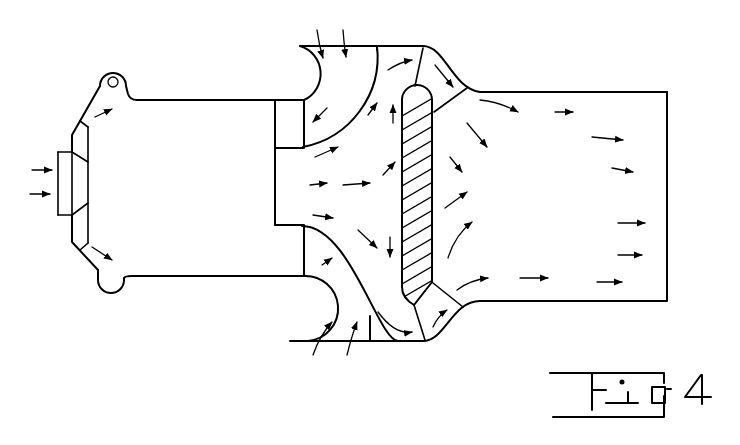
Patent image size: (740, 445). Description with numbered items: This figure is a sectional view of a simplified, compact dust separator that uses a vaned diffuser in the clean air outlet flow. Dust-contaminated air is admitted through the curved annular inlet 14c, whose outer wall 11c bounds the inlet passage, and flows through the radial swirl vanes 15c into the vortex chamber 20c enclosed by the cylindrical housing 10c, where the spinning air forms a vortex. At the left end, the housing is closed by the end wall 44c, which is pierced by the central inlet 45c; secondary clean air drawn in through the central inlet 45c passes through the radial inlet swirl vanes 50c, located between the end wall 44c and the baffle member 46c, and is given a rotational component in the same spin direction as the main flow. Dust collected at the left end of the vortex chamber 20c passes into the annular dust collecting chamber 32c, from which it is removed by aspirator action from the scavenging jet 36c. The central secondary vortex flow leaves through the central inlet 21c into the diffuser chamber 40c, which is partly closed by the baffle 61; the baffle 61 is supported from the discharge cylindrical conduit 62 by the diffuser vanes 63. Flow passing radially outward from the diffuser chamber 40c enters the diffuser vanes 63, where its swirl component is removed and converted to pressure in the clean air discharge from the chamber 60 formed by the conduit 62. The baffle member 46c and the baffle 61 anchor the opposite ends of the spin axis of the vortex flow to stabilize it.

The cylindrical housing 10c is at (202, 277).
The inlet vane wall 11c is at (318, 72).
The curved annular inlet 14c is at (357, 88).
The radial swirl vanes 15c is at (277, 118).
The vortex chamber 20c is at (211, 167).
The central inlet 21c is at (274, 205).
The annular dust collecting chamber 32c is at (113, 297).
The scavenging jet 36c is at (123, 73).
The diffuser chamber 40c is at (388, 215).
The end wall 44c is at (87, 111).
The central inlet 45c is at (68, 216).
The baffle member 46c is at (88, 173).
The radial inlet swirl vanes 50c is at (85, 222).
The clean air discharge chamber 60 is at (558, 175).
The baffle 61 is at (433, 183).
The discharge cylindrical conduit 62 is at (604, 92).
The diffuser vanes 63 is at (433, 61).